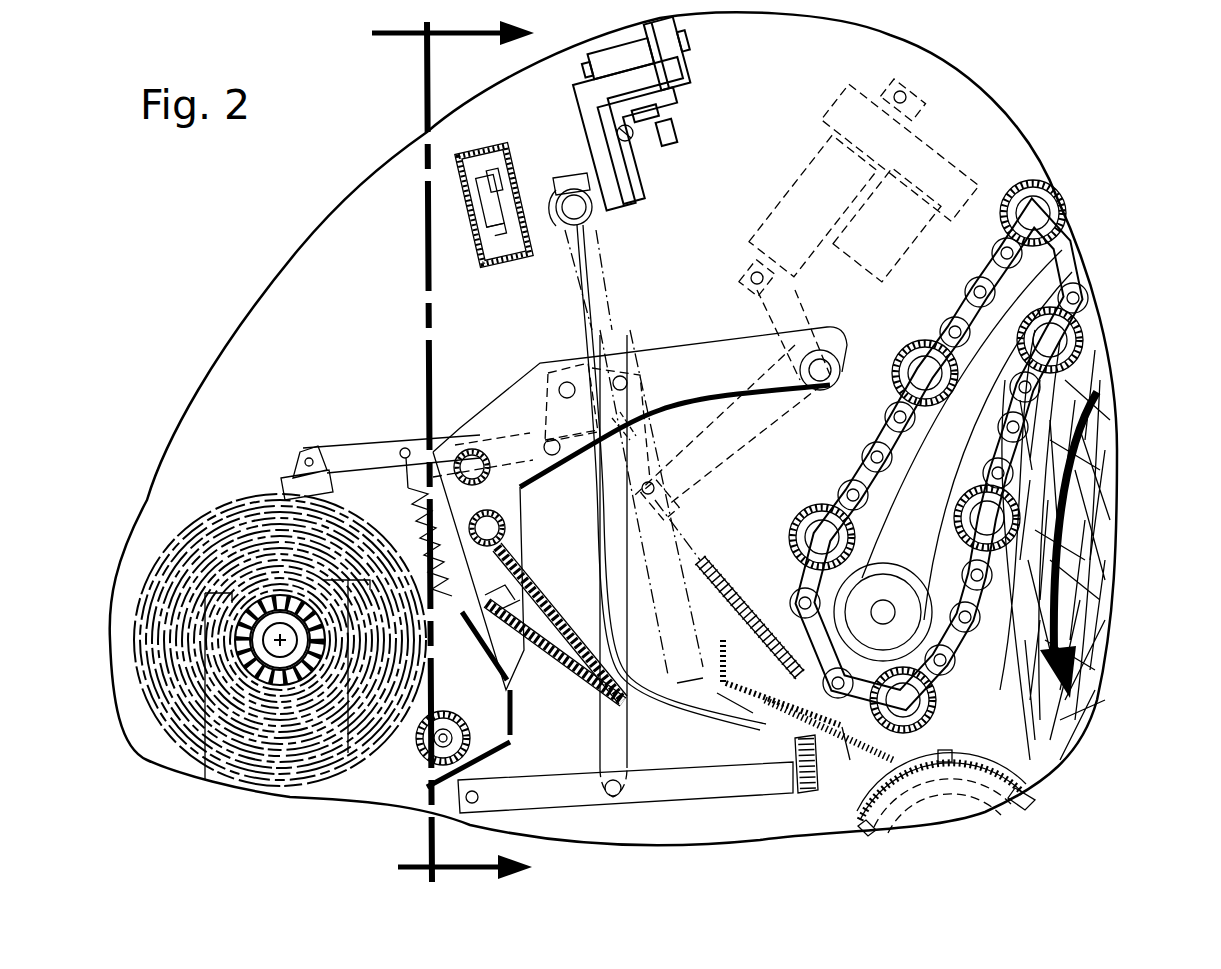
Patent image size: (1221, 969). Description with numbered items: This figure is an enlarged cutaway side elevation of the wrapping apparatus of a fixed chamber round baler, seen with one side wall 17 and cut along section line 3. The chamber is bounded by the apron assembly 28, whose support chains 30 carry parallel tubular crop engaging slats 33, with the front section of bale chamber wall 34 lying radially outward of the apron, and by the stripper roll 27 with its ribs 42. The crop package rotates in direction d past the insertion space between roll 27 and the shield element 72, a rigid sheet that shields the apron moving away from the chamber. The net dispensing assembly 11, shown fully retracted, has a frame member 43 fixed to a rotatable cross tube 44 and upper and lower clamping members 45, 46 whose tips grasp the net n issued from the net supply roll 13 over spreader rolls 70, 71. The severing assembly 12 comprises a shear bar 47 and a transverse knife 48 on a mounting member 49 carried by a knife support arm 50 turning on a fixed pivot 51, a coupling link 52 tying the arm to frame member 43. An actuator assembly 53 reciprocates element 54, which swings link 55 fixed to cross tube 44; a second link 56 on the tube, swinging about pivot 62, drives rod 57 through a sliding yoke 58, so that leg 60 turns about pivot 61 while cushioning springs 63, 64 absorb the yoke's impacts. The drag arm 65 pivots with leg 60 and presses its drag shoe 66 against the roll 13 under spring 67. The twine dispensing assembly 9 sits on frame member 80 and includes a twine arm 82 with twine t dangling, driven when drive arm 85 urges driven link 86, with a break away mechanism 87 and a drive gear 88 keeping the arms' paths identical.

The section line 3- 3 is at (453, 451).
The twine dispensing assembly 9 is at (542, 146).
The net dispensing assembly 11 is at (472, 368).
The severing assembly 12 is at (633, 824).
The net supply roll 13 is at (215, 505).
The side wall 17 is at (354, 237).
The stripper roll 27 is at (952, 794).
The apron assembly 28 is at (976, 258).
The support chains 30 is at (1082, 246).
The crop engaging slats 33 is at (1062, 183).
The front section of bale chamber wall 34 is at (1107, 276).
The ribs 42 is at (1012, 792).
The frame member 43 is at (710, 345).
The cross tube 44 is at (840, 372).
The upper clamping member 45 is at (568, 628).
The lower clamping member 46 is at (585, 686).
The shear bar 47 is at (843, 737).
The transverse knife 48 is at (770, 795).
The mounting member 49 is at (800, 792).
The knife support arm 50 is at (522, 797).
The fixed pivot 51 is at (440, 775).
The coupling link 52 is at (604, 556).
The actuator assembly 53 is at (793, 166).
The actuator element 54 is at (742, 272).
The link 55 is at (800, 305).
The link 56 is at (775, 425).
The rod 57 is at (690, 538).
The sliding yoke 58 is at (670, 497).
The leg 60 is at (540, 405).
The pivot 61 is at (565, 382).
The pivot 62 is at (818, 382).
The cushioning spring 63 is at (640, 428).
The cushioning spring 64 is at (788, 595).
The drag arm 65 is at (372, 440).
The drag shoe 66 is at (305, 455).
The spring 67 is at (406, 494).
The spreader roll 70 is at (492, 470).
The spreader roll 71 is at (506, 528).
The shield element 72 is at (843, 727).
The frame member 80 is at (465, 142).
The twine arm 82 is at (592, 212).
The drive arm 85 is at (632, 135).
The driven link 86 is at (612, 204).
The break away mechanism 87 is at (690, 52).
The drive gear 88 is at (518, 268).
The twine t is at (592, 278).
The net n is at (640, 712).
The direction of rotation d is at (1070, 462).